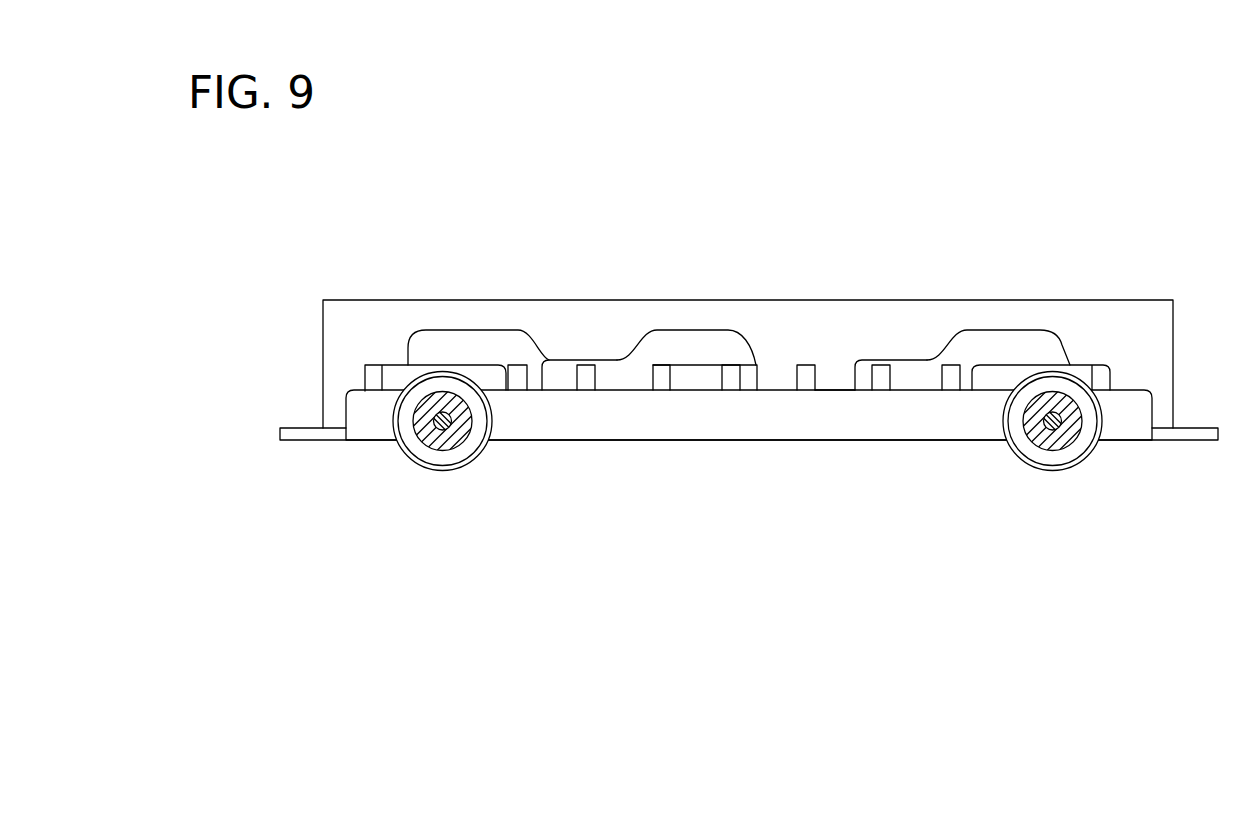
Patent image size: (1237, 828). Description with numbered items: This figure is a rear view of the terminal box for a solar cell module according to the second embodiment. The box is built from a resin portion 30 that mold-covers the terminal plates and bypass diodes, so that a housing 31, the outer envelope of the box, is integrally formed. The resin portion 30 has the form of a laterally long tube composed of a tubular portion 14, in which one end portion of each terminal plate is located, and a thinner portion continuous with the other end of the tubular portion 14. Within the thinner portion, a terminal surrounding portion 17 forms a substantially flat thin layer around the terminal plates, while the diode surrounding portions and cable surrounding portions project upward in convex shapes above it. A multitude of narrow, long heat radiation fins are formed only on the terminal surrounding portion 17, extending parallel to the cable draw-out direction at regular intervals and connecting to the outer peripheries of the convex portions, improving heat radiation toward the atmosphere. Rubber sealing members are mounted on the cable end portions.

The tubular portion 14 is at (1078, 315).
The terminal surrounding portion 17 is at (835, 390).
The resin portion 30 is at (749, 450).
The housing 31 is at (805, 432).